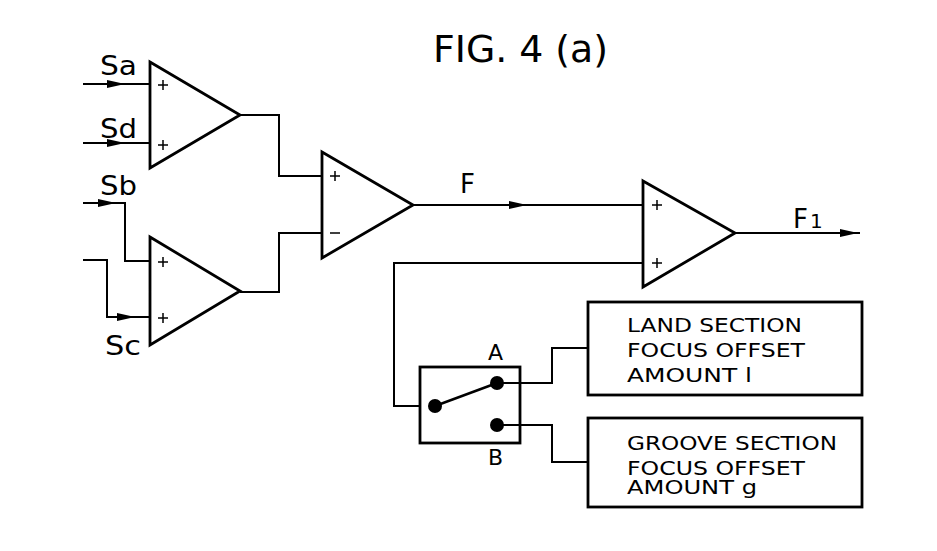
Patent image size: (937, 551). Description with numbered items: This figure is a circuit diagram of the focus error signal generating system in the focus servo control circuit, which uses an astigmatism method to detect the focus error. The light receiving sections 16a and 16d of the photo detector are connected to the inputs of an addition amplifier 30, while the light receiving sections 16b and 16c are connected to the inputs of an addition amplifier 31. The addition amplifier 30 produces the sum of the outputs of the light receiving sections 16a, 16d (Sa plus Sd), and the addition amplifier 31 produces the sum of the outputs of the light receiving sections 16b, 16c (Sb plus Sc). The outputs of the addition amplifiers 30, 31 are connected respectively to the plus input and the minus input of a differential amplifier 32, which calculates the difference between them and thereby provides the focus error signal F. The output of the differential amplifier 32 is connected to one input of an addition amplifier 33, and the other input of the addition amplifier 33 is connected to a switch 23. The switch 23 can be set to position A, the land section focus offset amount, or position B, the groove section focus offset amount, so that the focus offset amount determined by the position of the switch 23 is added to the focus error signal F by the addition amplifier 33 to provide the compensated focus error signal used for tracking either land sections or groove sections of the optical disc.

The light receiving section 16a is at (89, 85).
The light receiving section 16d is at (89, 144).
The light receiving section 16b is at (89, 225).
The light receiving section 16c is at (89, 281).
The addition amplifier 30 is at (205, 93).
The addition amplifier 31 is at (205, 267).
The differential amplifier 32 is at (375, 185).
The addition amplifier 33 is at (700, 212).
The switch 23 is at (440, 367).